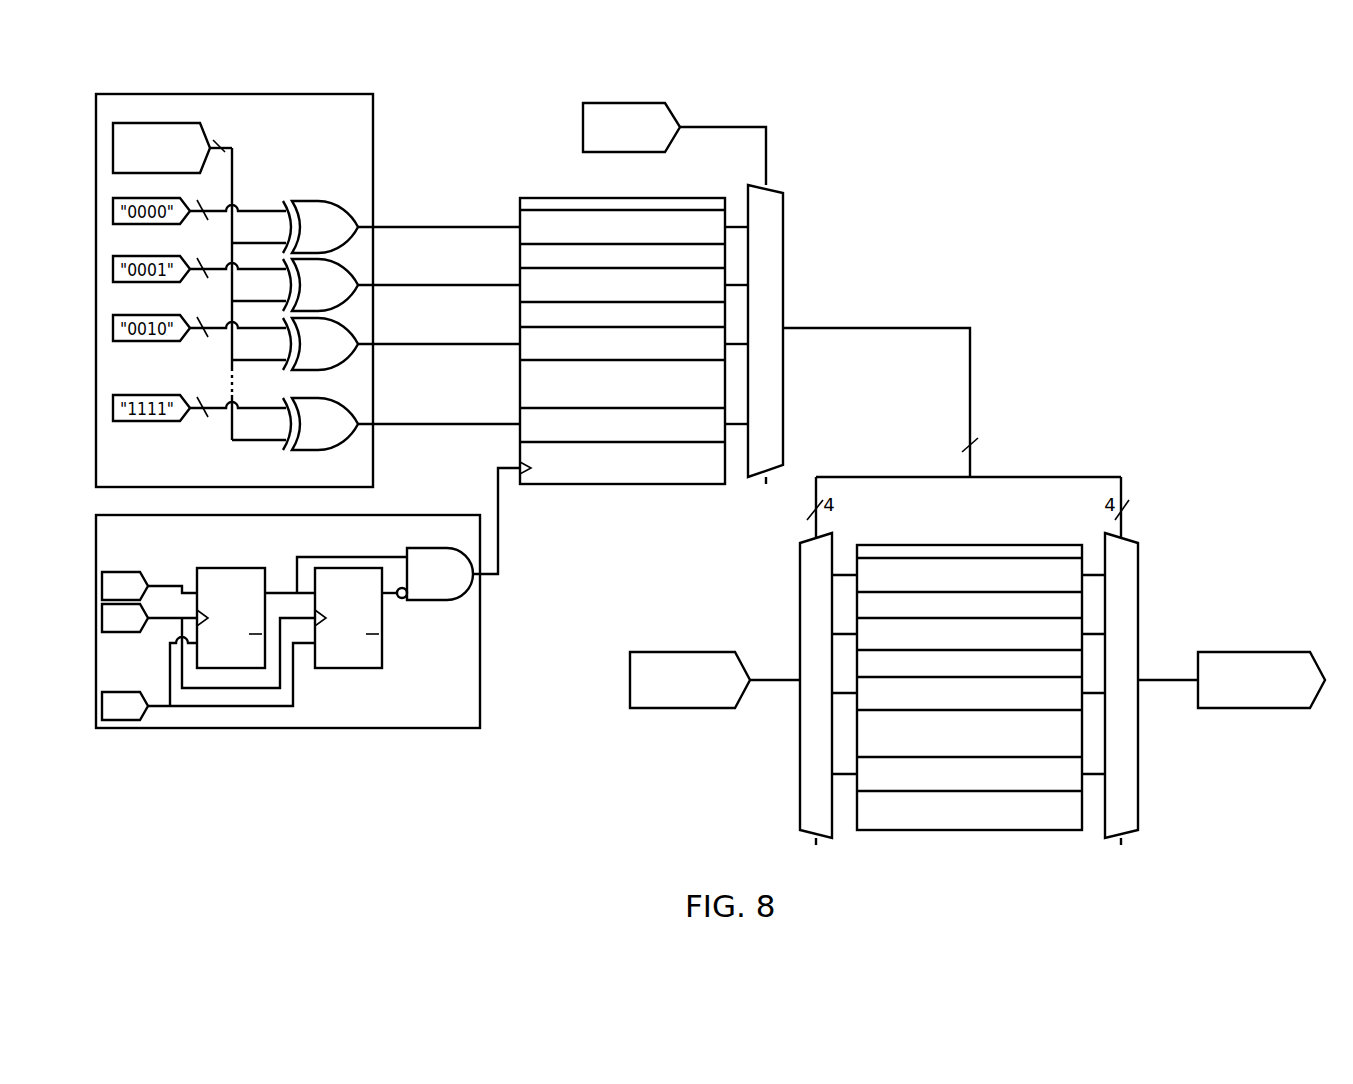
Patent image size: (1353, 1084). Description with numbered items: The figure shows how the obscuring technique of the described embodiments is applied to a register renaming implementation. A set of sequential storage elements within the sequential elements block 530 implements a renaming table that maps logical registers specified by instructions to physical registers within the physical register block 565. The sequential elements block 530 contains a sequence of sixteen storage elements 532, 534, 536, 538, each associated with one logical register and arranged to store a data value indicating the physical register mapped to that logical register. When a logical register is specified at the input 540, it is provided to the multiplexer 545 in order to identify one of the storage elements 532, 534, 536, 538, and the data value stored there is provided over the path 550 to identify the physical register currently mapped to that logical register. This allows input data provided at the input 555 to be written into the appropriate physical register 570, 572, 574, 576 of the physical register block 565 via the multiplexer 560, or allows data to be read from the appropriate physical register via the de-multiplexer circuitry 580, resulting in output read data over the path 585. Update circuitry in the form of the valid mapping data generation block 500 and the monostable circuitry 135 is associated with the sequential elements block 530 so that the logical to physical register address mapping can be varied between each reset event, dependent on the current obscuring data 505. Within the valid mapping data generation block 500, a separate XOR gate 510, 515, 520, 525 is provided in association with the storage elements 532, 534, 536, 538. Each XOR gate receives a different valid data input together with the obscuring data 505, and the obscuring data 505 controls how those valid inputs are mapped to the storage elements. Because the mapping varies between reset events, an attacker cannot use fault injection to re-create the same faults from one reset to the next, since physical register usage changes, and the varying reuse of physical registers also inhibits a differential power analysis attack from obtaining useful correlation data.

The monostable circuitry 135 is at (275, 728).
The valid mapping data generation block 500 is at (373, 140).
The obscuring data 505 is at (203, 123).
The XOR gate 510 is at (360, 219).
The XOR gate 515 is at (360, 277).
The XOR gate 520 is at (360, 336).
The XOR gate 525 is at (360, 416).
The sequential elements block 530 is at (615, 485).
The storage element 532 is at (520, 213).
The storage element 534 is at (520, 271).
The storage element 536 is at (520, 330).
The storage element 538 is at (520, 411).
The input 540 is at (583, 126).
The multiplexer 545 is at (783, 228).
The path 550 is at (970, 362).
The input 555 is at (686, 651).
The multiplexer 560 is at (800, 812).
The physical register block 565 is at (950, 832).
The physical register 570 is at (1082, 584).
The physical register 572 is at (1082, 645).
The physical register 574 is at (1082, 705).
The physical register 576 is at (1082, 785).
The de-multiplexer circuitry 580 is at (1140, 560).
The path 585 is at (1262, 651).